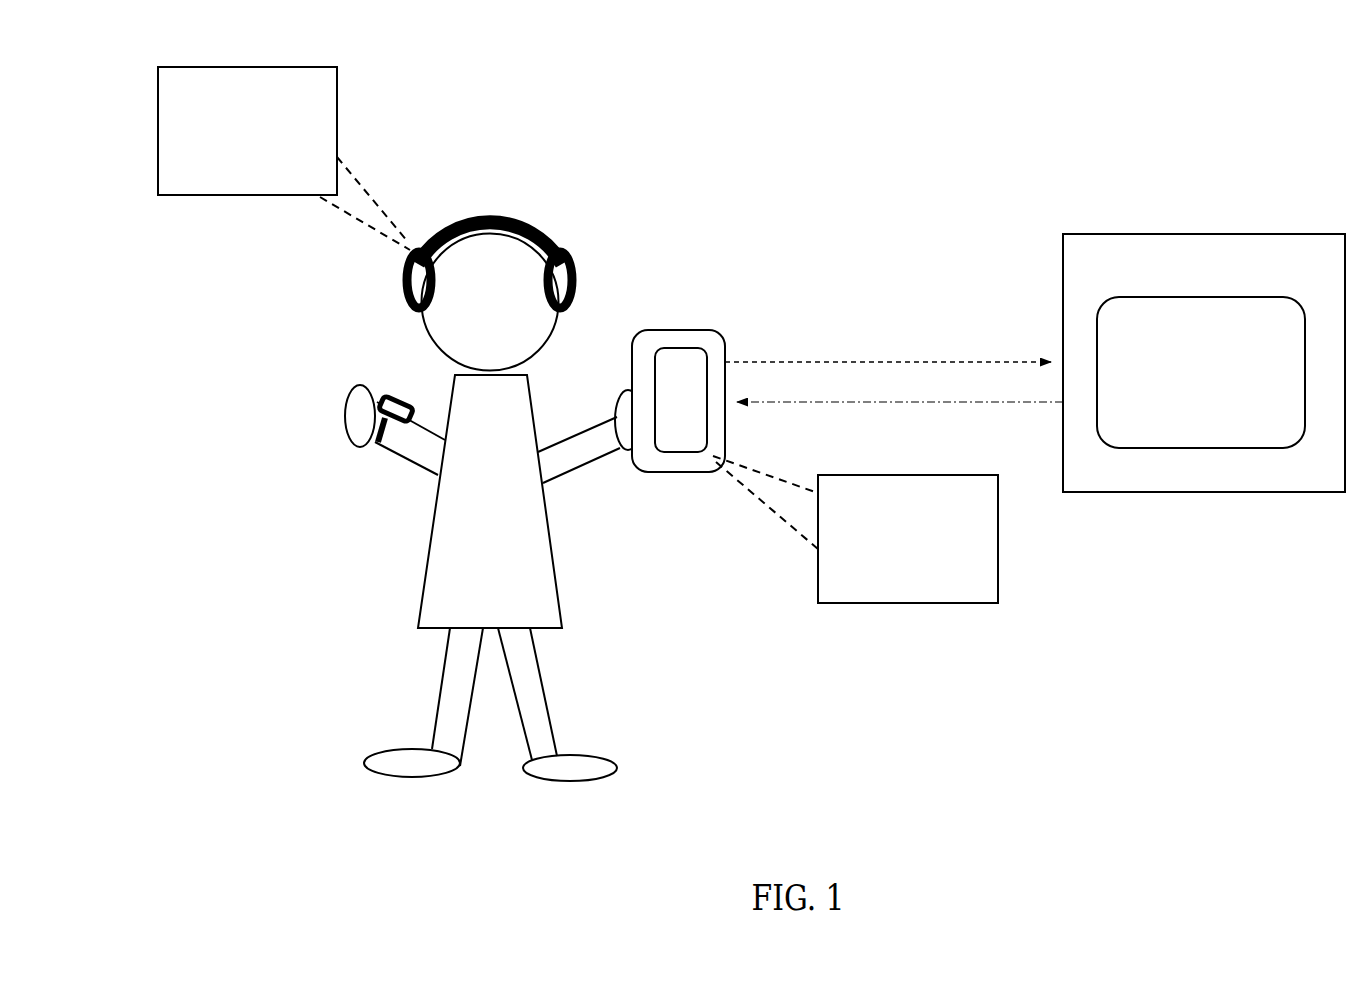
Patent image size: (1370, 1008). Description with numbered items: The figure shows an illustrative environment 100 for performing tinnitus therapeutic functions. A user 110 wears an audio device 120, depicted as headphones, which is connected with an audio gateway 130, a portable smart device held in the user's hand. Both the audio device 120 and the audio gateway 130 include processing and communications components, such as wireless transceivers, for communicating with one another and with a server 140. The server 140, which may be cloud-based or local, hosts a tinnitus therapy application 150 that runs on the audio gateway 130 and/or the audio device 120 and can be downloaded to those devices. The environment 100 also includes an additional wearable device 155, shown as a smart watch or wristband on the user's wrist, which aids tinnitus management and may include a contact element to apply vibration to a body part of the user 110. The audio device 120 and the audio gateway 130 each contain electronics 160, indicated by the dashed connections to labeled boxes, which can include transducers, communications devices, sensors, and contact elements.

The environment 100 is at (808, 37).
The user 110 is at (352, 663).
The audio device 120 is at (557, 218).
The audio gateway 130 is at (740, 345).
The server 140 is at (1267, 277).
The tinnitus therapy application 150 is at (1222, 436).
The additional wearable device 155 is at (390, 380).
The electronics 160 is at (278, 166).